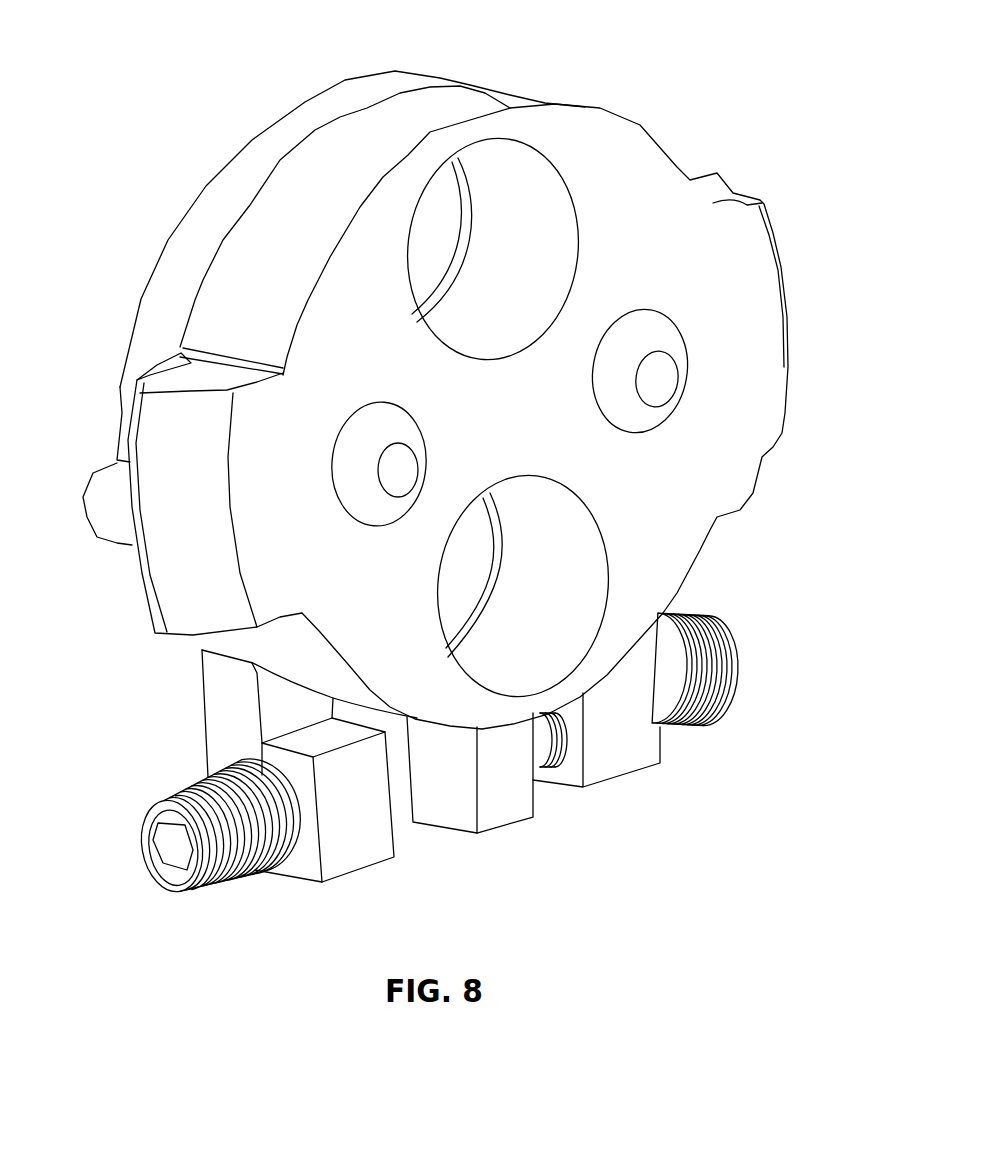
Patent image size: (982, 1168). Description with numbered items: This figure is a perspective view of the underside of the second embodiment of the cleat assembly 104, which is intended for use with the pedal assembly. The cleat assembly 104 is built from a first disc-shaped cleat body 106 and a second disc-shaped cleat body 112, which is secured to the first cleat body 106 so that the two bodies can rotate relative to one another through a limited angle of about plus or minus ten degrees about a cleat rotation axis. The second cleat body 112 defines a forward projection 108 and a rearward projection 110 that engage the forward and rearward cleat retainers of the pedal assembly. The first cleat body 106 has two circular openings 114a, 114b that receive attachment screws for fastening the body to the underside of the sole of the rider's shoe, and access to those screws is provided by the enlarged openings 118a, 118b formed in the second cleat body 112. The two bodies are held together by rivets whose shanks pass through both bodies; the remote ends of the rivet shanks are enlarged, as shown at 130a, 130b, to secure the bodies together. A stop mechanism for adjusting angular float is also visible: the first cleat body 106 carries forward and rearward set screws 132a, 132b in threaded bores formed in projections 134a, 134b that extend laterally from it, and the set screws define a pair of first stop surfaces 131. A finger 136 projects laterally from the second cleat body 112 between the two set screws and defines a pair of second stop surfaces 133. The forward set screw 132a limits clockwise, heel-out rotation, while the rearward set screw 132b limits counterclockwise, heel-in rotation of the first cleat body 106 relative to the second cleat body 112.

The cleat assembly 104 is at (165, 159).
The first disc-shaped cleat body 106 is at (275, 127).
The forward projection 108 is at (787, 270).
The rearward projection 110 is at (160, 513).
The second disc-shaped cleat body 112 is at (740, 198).
The circular opening 114a is at (428, 232).
The circular opening 114b is at (453, 605).
The enlarged opening 118a is at (530, 230).
The enlarged opening 118b is at (557, 597).
The enlarged end of rivet shank 130a is at (680, 372).
The enlarged end of rivet shank 130b is at (355, 503).
The first stop surfaces 131 is at (540, 743).
The forward set screw 132a is at (718, 683).
The rearward set screw 132b is at (146, 825).
The second stop surfaces 133 is at (463, 807).
The projection 134a is at (630, 765).
The projection 134b is at (357, 860).
The finger 136 is at (505, 817).